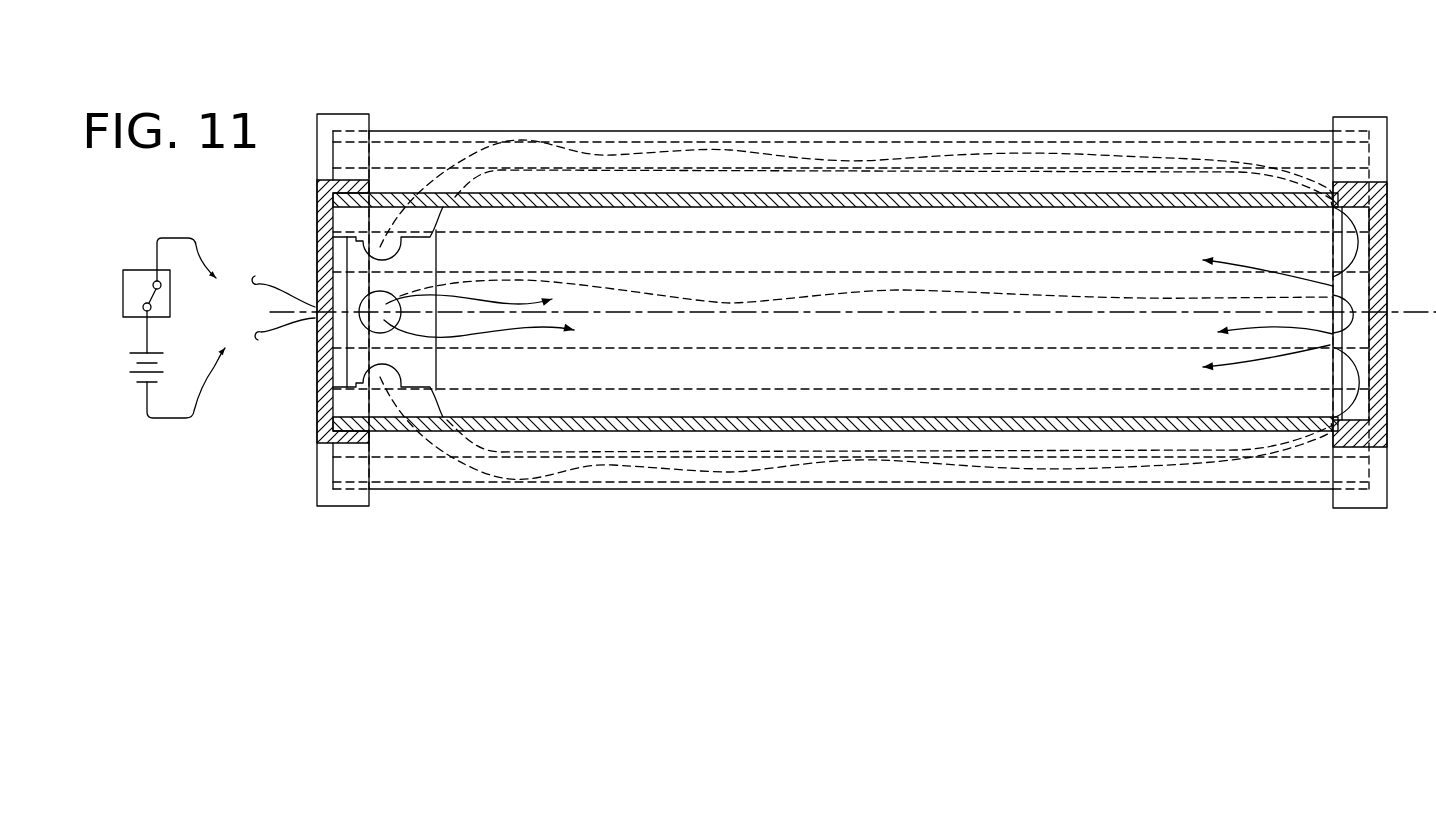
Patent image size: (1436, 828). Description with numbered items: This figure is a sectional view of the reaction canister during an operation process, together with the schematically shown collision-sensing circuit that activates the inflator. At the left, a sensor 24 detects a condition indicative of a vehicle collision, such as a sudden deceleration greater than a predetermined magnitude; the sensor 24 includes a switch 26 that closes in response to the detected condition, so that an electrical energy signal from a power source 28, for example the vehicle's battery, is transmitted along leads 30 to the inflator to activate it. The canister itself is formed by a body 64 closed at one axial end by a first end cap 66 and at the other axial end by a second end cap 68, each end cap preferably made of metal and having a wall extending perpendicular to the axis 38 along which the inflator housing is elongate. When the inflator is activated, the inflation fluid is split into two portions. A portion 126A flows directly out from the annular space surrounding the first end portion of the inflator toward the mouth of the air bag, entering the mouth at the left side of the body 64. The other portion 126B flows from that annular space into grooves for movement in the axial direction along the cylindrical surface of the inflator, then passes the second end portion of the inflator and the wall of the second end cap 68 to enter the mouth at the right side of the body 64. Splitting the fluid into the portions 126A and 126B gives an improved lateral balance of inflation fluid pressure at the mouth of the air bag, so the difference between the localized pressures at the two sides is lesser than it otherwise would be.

The sensor 24 is at (140, 277).
The switch 26 is at (153, 297).
The power source 28 is at (128, 365).
The leads 30 is at (177, 237).
The axis 38 is at (1421, 311).
The body 64 is at (855, 128).
The first end cap 66 is at (348, 112).
The second end cap 68 is at (1359, 116).
The portion of the inflation fluid 126A is at (464, 298).
The other portion of the inflation fluid 126B is at (1283, 358).